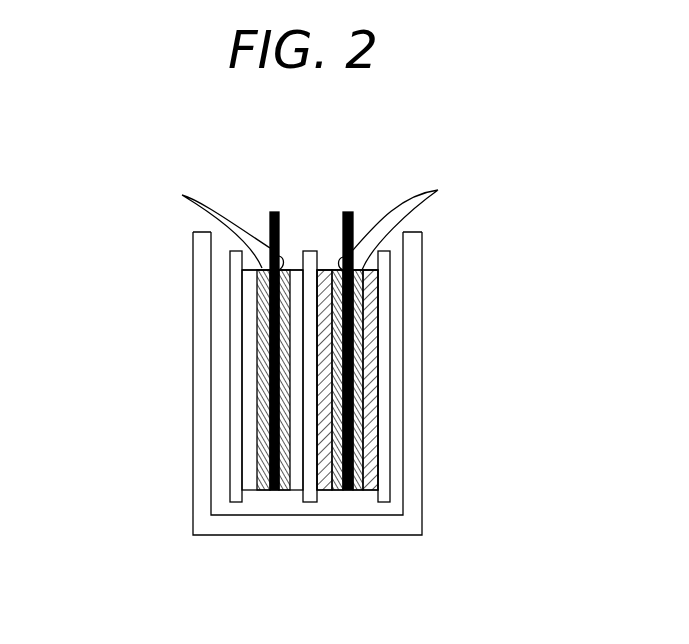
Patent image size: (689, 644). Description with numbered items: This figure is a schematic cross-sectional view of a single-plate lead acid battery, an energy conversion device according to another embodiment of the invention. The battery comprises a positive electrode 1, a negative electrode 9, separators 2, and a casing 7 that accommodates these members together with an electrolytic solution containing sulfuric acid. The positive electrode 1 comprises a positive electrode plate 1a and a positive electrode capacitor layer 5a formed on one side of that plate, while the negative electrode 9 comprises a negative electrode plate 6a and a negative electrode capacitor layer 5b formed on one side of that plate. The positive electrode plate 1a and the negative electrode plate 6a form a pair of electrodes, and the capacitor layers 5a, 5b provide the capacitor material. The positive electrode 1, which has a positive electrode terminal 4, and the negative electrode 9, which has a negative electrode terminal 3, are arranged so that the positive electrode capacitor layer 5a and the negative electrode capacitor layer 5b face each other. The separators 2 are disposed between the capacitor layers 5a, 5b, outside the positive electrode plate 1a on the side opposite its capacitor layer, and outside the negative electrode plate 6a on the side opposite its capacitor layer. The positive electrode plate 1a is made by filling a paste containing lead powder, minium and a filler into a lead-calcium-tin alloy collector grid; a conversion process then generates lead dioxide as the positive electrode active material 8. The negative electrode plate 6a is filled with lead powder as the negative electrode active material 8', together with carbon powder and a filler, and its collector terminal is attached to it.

The positive electrode 1 is at (364, 232).
The positive electrode plate 1a is at (355, 310).
The separators 2 is at (236, 502).
The negative electrode terminal 3 is at (350, 211).
The positive electrode terminal 4 is at (276, 211).
The positive electrode capacitor layer 5a is at (405, 224).
The negative electrode capacitor layer 5b is at (216, 224).
The negative electrode plate 6a is at (262, 355).
The casing 7 is at (412, 450).
The positive electrode active material 8 is at (420, 376).
The negative electrode active material 8' is at (180, 376).
The negative electrode 9 is at (258, 232).